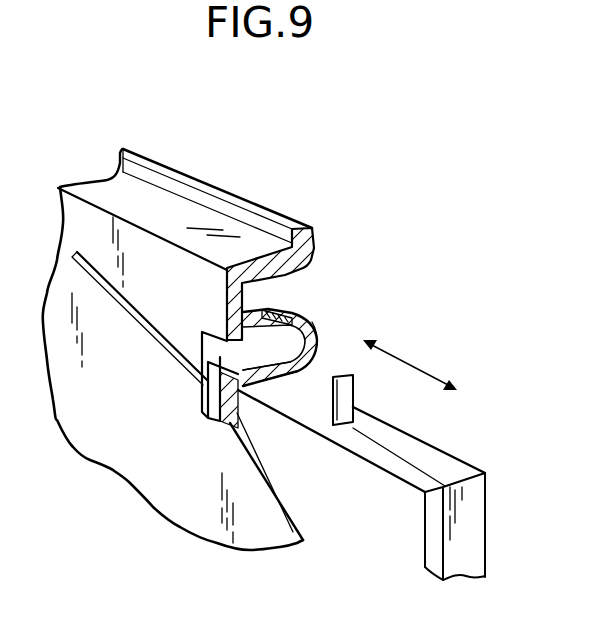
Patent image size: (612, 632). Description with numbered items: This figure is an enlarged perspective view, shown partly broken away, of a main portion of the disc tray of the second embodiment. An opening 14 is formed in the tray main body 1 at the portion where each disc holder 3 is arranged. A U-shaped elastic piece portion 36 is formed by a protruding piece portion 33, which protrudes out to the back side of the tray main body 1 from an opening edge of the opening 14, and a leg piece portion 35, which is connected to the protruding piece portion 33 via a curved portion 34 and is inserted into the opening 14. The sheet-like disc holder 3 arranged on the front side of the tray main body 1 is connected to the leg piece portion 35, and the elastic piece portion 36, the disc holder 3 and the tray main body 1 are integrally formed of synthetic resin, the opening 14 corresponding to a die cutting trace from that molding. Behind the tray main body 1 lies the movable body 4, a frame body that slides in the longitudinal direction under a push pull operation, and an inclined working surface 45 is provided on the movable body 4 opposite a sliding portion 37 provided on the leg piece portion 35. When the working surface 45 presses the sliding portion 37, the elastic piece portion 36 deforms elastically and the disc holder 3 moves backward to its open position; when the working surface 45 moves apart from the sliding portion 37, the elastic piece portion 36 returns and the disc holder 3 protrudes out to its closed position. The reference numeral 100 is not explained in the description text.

The tray main body 1 is at (170, 205).
The disc holder 3 is at (217, 400).
The movable body 4 is at (477, 535).
The opening 14 is at (195, 350).
The protruding piece portion 33 is at (266, 311).
The curved portion 34 is at (325, 338).
The leg piece portion 35 is at (262, 382).
The elastic piece portion 36 is at (313, 310).
The sliding portion 37 is at (293, 385).
The working surface 45 is at (332, 362).
The main body 100 is at (147, 473).